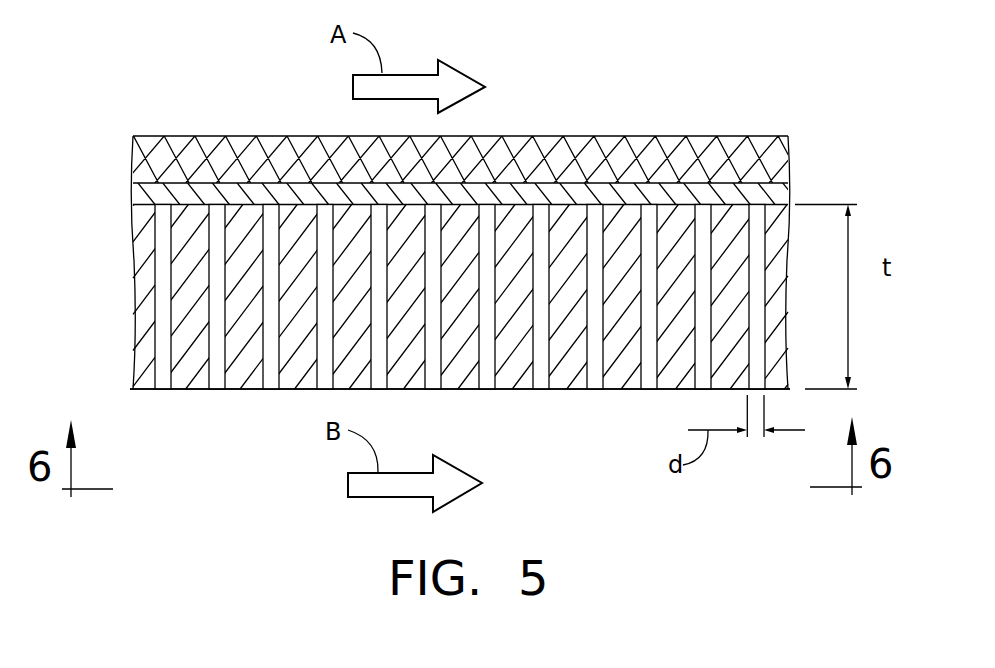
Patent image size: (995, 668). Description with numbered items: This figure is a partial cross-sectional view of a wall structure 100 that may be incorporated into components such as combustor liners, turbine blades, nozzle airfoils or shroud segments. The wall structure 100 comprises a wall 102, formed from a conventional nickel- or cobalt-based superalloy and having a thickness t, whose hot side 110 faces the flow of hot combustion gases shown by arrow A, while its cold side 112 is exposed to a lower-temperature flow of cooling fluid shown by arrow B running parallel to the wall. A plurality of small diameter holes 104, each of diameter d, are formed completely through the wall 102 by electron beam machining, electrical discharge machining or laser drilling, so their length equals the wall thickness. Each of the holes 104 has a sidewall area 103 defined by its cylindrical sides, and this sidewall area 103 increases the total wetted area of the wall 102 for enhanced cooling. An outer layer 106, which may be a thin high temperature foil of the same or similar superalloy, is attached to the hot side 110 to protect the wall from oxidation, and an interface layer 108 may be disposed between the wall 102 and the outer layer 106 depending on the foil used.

The wall structure 100 is at (670, 80).
The wall 102 is at (140, 318).
The sidewall area 103 is at (487, 390).
The holes 104 is at (213, 390).
The outer layer 106 is at (210, 136).
The interface layer 108 is at (300, 186).
The hot side 110 is at (137, 198).
The cold side 112 is at (293, 389).